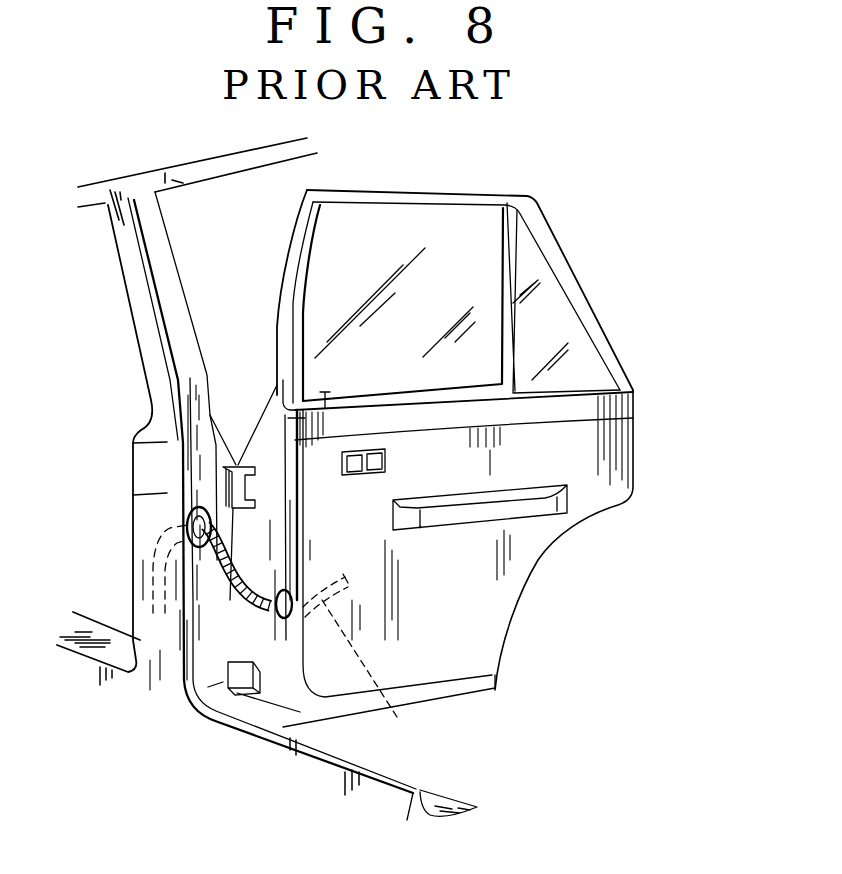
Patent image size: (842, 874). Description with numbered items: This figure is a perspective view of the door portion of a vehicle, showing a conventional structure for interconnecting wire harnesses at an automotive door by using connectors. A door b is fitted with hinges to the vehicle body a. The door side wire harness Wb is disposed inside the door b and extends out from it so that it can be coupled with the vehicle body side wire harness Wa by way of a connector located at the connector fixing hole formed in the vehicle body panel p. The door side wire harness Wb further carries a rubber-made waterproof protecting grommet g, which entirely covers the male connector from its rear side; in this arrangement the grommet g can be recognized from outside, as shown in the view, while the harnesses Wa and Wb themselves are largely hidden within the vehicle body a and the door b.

The vehicle body a is at (168, 635).
The door b is at (607, 477).
The waterproof protecting grommet g is at (203, 505).
The vehicle body panel p is at (187, 508).
The vehicle body side wire harness Wa is at (150, 568).
The door side wire harness Wb is at (377, 659).